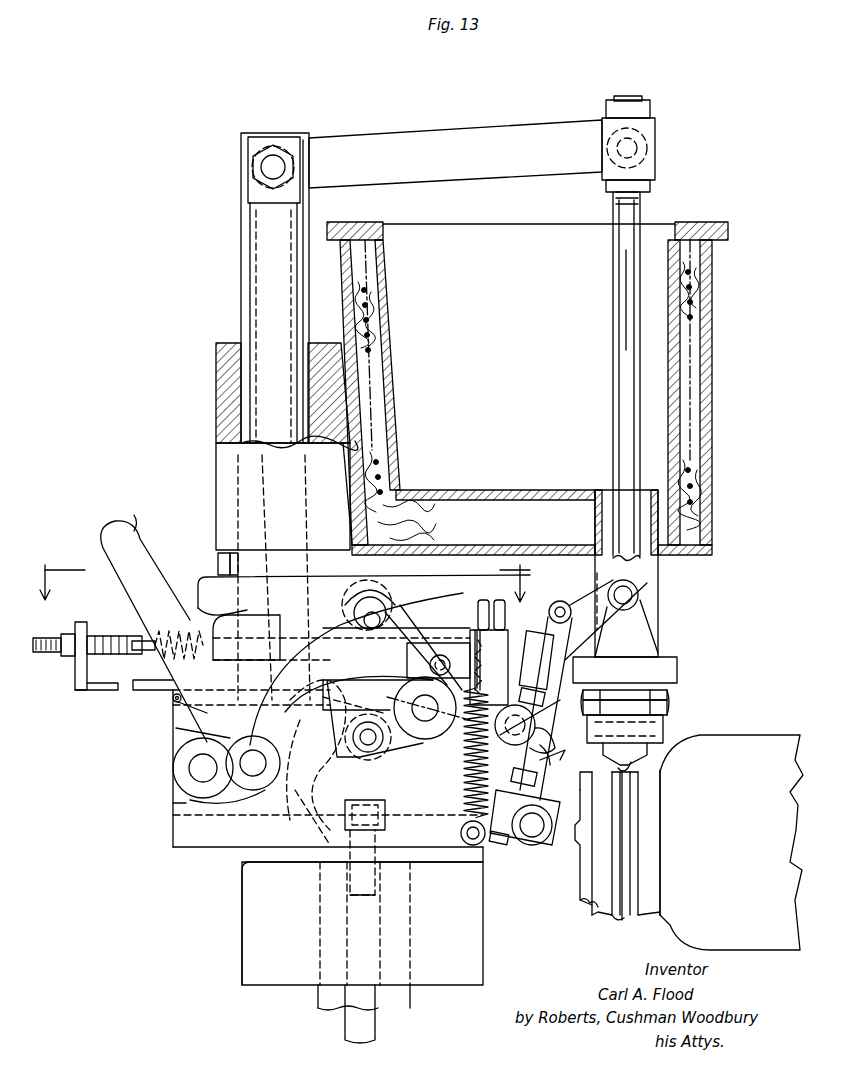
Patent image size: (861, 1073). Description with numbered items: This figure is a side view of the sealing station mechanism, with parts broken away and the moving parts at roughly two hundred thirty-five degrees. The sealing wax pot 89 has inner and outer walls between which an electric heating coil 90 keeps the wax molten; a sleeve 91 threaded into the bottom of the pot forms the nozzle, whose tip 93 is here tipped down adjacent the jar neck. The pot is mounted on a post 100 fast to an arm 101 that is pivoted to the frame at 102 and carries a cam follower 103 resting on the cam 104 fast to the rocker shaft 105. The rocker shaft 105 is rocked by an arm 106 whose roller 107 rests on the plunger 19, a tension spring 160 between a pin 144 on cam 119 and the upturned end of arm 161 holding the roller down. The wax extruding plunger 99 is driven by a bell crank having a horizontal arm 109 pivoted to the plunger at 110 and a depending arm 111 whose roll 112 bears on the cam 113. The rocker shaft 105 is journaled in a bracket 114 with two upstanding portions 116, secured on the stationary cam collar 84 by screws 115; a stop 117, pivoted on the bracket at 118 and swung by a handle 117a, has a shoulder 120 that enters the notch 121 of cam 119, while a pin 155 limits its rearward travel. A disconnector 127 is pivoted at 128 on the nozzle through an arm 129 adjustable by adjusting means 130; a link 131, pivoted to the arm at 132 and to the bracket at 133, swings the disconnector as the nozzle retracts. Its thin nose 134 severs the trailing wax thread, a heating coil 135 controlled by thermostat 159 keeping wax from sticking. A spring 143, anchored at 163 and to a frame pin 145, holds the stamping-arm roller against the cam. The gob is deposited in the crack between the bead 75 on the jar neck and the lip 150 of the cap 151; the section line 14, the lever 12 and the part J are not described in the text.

The horizontal arm 109 is at (455, 154).
The pivotal connection 110 is at (660, 145).
The post 100 is at (299, 291).
The wax extruding plunger 99 is at (625, 312).
The electric heating coil 90 is at (702, 303).
The sealing wax pot 89 is at (713, 359).
The depending arm 111 is at (268, 469).
The handle 117a is at (134, 514).
The lever 12 is at (149, 510).
The section line 14 is at (284, 594).
The arm 161 is at (70, 630).
The tension spring 160 is at (162, 642).
The arm 101 is at (331, 700).
The shoulder 120 is at (275, 612).
The cam follower 103 is at (392, 582).
The cam 104 is at (398, 618).
The cam 119 is at (418, 636).
The anchor point 163 is at (488, 605).
The pin 144 is at (457, 667).
The pivotal connection 132 is at (563, 600).
The adjusting means 130 is at (541, 614).
The sleeve 91 is at (658, 577).
The pivot 128 is at (641, 597).
The arm 129 is at (597, 636).
The pin 155 is at (172, 701).
The stop 117 is at (200, 710).
The upstanding portions 116 is at (183, 727).
The pivot 102 is at (195, 772).
The bracket 114 is at (180, 810).
The pivot 118 is at (235, 774).
The roll 112 is at (318, 755).
The notch 121 is at (310, 782).
The cam 113 is at (272, 816).
The stationary cam collar 84 is at (242, 897).
The screws 115 is at (350, 885).
The plunger 19 is at (352, 1031).
The arm 106 is at (378, 718).
The roller 107 is at (368, 725).
The rocker shaft 105 is at (428, 710).
The spring 143 is at (468, 800).
The pin 145 is at (480, 842).
The disconnector 127 is at (512, 748).
The thermostat 159 is at (525, 725).
The nose 134 is at (572, 768).
The heating coil 135 is at (538, 768).
The link 131 is at (530, 785).
The pivotal connection 133 is at (548, 838).
The tip 93 is at (645, 758).
The bead 75 is at (648, 920).
The lip 150 is at (605, 858).
The cap 151 is at (589, 906).
The shoe J is at (731, 842).